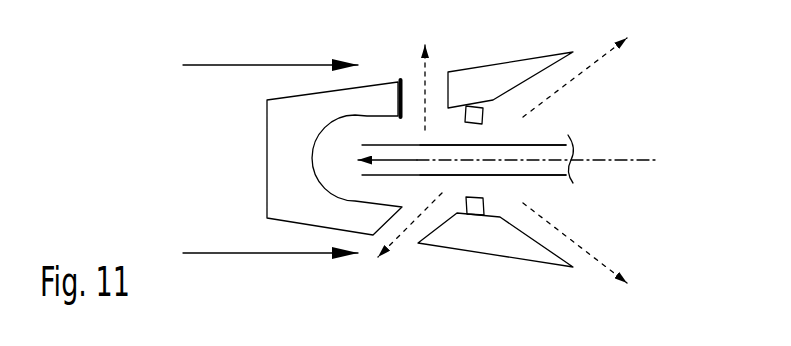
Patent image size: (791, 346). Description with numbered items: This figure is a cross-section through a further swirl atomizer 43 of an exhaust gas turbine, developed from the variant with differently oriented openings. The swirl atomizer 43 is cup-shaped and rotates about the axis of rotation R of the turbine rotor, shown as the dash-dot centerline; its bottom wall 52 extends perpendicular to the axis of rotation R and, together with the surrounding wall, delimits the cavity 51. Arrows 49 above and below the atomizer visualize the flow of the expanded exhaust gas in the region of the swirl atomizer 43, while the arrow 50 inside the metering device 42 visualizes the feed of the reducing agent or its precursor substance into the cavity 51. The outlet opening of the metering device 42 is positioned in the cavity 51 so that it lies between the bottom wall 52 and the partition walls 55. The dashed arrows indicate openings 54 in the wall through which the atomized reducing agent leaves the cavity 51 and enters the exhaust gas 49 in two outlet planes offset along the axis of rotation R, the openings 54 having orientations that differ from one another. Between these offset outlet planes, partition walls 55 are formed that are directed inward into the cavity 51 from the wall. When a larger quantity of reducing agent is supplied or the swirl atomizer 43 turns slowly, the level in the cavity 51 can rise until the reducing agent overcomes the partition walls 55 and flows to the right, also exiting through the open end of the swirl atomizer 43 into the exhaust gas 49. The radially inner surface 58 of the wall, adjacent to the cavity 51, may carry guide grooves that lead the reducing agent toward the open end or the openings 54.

The metering device 42 is at (545, 143).
The swirl atomizer 43 is at (266, 140).
The arrows / exhaust gas 49 is at (205, 65).
The reducing agent / feed arrow 50 is at (535, 160).
The cavity 51 is at (343, 175).
The bottom wall 52 is at (280, 183).
The openings 54 is at (438, 70).
The partition walls 55 is at (474, 106).
The radially inner surface 58 is at (385, 134).
The axis of rotation R is at (645, 160).